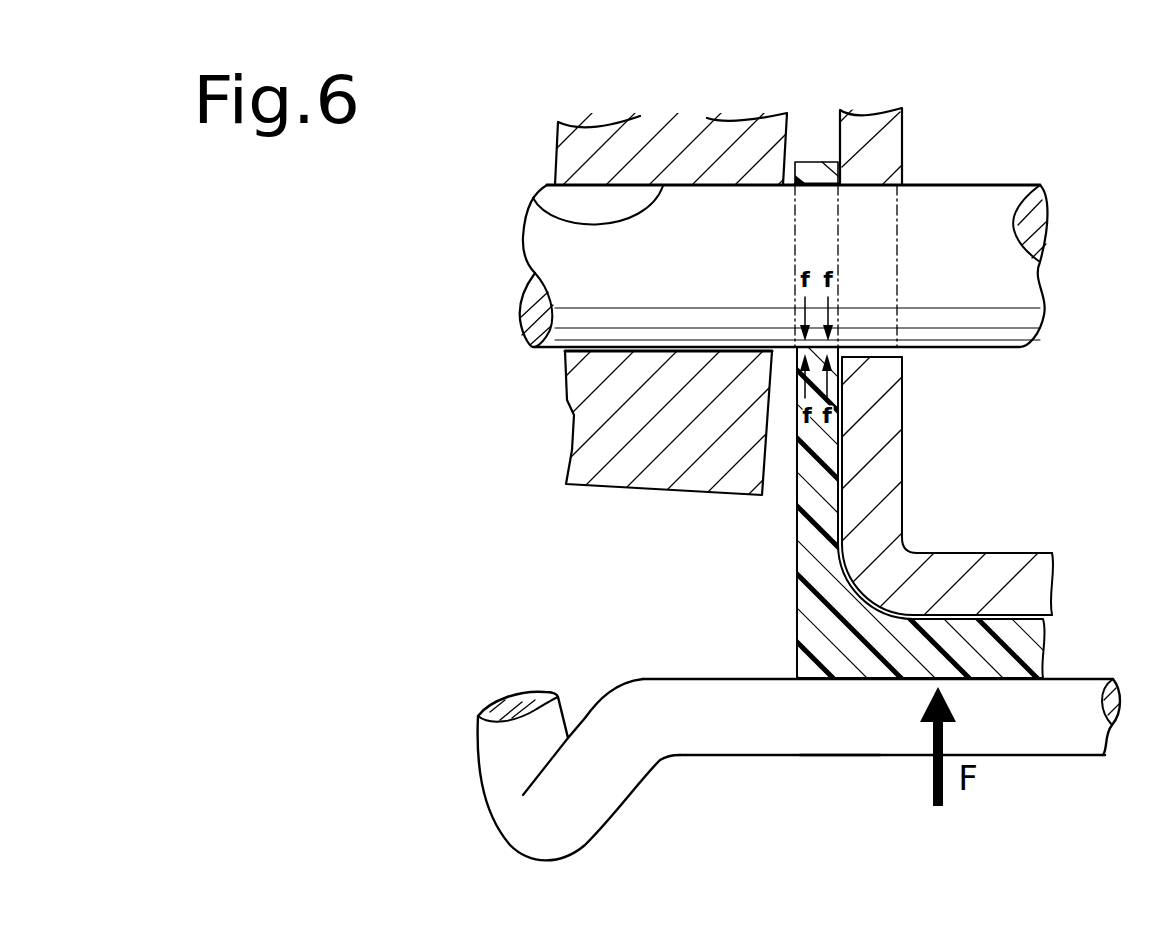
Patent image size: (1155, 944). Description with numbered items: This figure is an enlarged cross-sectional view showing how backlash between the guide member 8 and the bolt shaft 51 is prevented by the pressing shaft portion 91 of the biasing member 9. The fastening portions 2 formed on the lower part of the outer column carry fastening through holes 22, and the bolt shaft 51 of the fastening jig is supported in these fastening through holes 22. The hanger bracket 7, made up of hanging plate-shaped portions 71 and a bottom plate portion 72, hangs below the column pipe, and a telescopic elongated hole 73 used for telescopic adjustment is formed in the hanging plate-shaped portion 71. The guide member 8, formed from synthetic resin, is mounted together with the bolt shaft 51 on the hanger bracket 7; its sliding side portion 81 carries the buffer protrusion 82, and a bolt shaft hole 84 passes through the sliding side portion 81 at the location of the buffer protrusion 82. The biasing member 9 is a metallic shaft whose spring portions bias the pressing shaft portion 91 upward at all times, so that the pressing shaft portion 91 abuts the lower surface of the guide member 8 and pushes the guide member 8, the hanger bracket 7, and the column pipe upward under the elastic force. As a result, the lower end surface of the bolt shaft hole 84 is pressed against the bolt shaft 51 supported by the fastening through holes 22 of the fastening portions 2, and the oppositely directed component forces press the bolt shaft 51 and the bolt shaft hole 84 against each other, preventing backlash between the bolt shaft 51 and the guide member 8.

The fastening portion 2 is at (550, 129).
The fastening through hole 22 is at (538, 205).
The bolt shaft 51 is at (997, 185).
The hanger bracket 7 is at (914, 129).
The hanging plate-shaped portion 71 is at (904, 464).
The bottom plate portion 72 is at (1012, 553).
The telescopic elongated hole 73 is at (873, 357).
The guide member 8 is at (784, 616).
The sliding side portion 81 is at (797, 554).
The buffer protrusion 82 is at (905, 225).
The bolt shaft hole 84 is at (808, 185).
The biasing member 9 is at (1075, 762).
The pressing shaft portion 91 is at (838, 746).